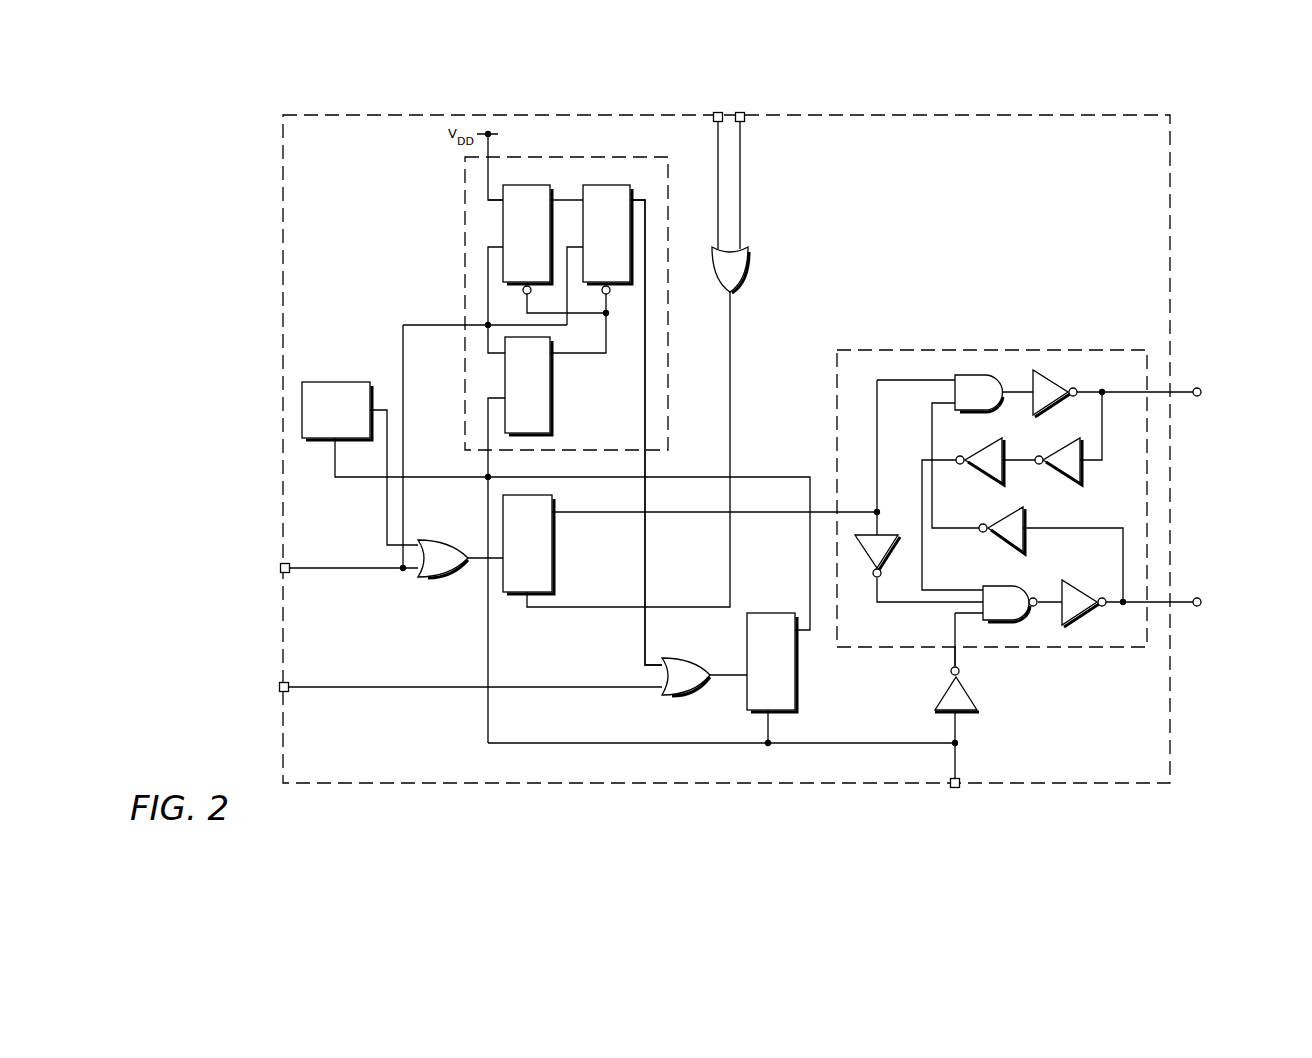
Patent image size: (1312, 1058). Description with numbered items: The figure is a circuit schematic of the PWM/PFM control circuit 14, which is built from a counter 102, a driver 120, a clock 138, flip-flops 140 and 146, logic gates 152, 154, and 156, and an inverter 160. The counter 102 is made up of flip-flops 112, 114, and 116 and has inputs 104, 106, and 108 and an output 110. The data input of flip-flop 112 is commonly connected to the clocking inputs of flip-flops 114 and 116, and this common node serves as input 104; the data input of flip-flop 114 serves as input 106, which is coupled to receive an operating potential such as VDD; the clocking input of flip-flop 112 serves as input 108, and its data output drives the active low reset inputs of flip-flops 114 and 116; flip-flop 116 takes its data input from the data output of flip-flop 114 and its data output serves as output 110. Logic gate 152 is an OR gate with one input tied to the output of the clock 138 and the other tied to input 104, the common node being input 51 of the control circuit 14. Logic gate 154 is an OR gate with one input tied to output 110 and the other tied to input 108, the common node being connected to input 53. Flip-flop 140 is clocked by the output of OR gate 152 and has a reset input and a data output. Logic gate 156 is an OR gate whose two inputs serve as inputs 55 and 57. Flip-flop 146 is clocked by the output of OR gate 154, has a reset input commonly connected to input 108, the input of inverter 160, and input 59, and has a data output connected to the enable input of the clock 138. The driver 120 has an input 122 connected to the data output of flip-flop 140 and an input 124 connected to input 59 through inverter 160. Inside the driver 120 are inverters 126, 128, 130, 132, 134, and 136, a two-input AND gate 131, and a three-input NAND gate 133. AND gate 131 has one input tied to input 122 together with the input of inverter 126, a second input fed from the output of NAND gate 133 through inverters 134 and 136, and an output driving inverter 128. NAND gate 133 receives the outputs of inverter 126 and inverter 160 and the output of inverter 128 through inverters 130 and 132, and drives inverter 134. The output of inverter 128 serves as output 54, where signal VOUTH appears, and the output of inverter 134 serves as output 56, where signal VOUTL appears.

The PWM/PFM control circuit 14 is at (224, 757).
The input 51 is at (280, 568).
The input 53 is at (279, 687).
The output 54 is at (1186, 390).
The input 55 is at (716, 111).
The output 56 is at (1186, 600).
The input 57 is at (741, 111).
The input 59 is at (958, 788).
The counter 102 is at (465, 243).
The input 104 is at (455, 325).
The input 106 is at (495, 212).
The input 108 is at (488, 477).
The output 110 is at (645, 472).
The flip-flop 112 is at (552, 396).
The flip-flop 114 is at (527, 185).
The flip-flop 116 is at (613, 185).
The driver 120 is at (1087, 350).
The input 122 is at (818, 512).
The input 124 is at (945, 655).
The inverter 126 is at (895, 560).
The inverter 128 is at (1050, 382).
The inverter 130 is at (1060, 480).
The AND gate 131 is at (975, 412).
The inverter 132 is at (985, 480).
The NAND gate 133 is at (1005, 622).
The inverter 134 is at (1075, 590).
The inverter 136 is at (1005, 548).
The clock 138 is at (340, 382).
The flip-flop 140 is at (554, 538).
The flip-flop 146 is at (797, 671).
The logic gate 152 is at (434, 541).
The logic gate 154 is at (683, 659).
The logic gate 156 is at (750, 262).
The inverter 160 is at (968, 690).